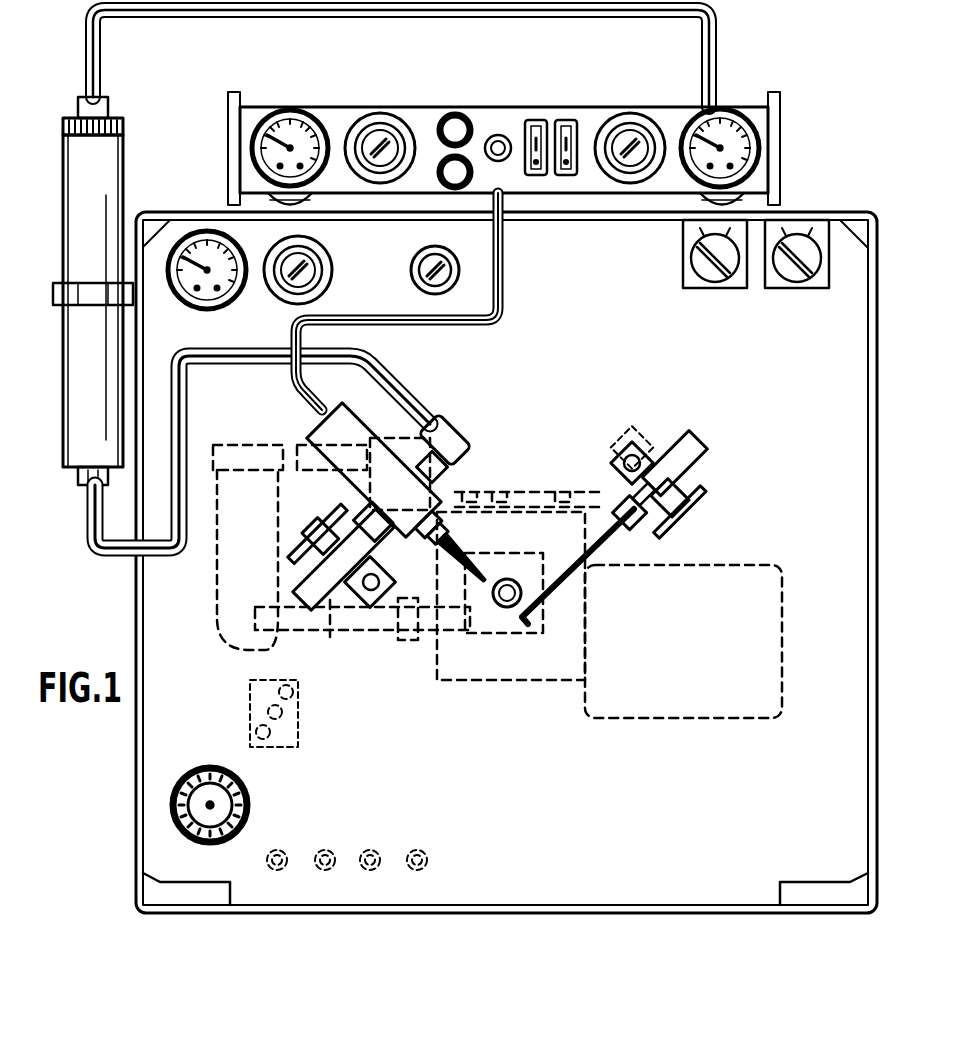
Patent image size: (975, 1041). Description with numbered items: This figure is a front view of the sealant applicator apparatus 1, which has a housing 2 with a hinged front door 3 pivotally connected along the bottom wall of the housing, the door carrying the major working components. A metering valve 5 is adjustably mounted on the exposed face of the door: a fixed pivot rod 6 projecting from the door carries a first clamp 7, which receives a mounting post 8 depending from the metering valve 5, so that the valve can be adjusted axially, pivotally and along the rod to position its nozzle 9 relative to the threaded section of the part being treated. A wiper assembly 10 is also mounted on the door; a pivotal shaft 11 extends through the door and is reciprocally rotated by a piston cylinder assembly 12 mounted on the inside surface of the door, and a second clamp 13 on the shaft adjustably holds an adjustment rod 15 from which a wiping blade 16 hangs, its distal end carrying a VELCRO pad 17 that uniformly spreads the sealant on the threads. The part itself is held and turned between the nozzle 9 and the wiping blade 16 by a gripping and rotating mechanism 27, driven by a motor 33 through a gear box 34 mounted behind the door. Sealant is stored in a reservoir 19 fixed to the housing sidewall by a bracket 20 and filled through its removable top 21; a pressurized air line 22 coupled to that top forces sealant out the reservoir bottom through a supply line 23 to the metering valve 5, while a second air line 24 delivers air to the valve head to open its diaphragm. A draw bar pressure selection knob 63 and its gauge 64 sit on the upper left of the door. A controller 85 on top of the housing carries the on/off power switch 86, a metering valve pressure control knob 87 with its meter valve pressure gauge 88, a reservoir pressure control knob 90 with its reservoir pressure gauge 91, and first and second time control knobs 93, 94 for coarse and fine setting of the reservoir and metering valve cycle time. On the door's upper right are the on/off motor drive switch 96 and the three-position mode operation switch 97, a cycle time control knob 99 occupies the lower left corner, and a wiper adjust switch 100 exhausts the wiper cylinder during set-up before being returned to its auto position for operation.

The sealant applicator apparatus 1 is at (58, 98).
The housing 2 is at (137, 657).
The hinged front door 3 is at (826, 452).
The metering valve 5 is at (320, 432).
The fixed pivot rod 6 is at (368, 594).
The first clamp 7 is at (312, 524).
The mounting post 8 is at (374, 540).
The nozzle 9 is at (480, 553).
The wiper assembly 10 is at (625, 418).
The pivotal shaft 11 is at (645, 450).
The piston cylinder assembly 12 is at (546, 495).
The second clamp 13 is at (700, 497).
The adjustment rod 15 is at (690, 455).
The wiping blade 16 is at (598, 548).
The VELCRO pad 17 is at (520, 612).
The reservoir 19 is at (72, 205).
The bracket 20 is at (62, 300).
The removable top 21 is at (62, 125).
The pressurized air line 22 is at (220, 30).
The supply line 23 is at (152, 558).
The second air line 24 is at (506, 280).
The gripping and rotating mechanism 27 is at (512, 560).
The motor 33 is at (685, 685).
The gear box 34 is at (457, 608).
The draw bar pressure selection knob 63 is at (318, 272).
The gauge 64 is at (188, 290).
The controller 85 is at (503, 107).
The on/off power switch 86 is at (537, 125).
The metering valve pressure control knob 87 is at (378, 125).
The meter valve pressure gauge 88 is at (282, 130).
The reservoir pressure control knob 90 is at (620, 128).
The reservoir pressure gauge 91 is at (735, 165).
The first time control knob 93 is at (470, 176).
The second time control knob 94 is at (455, 112).
The on/off motor drive switch 96 is at (700, 270).
The mode operation switch 97 is at (784, 272).
The cycle time control knob 99 is at (172, 810).
The wiper adjust switch 100 is at (441, 283).